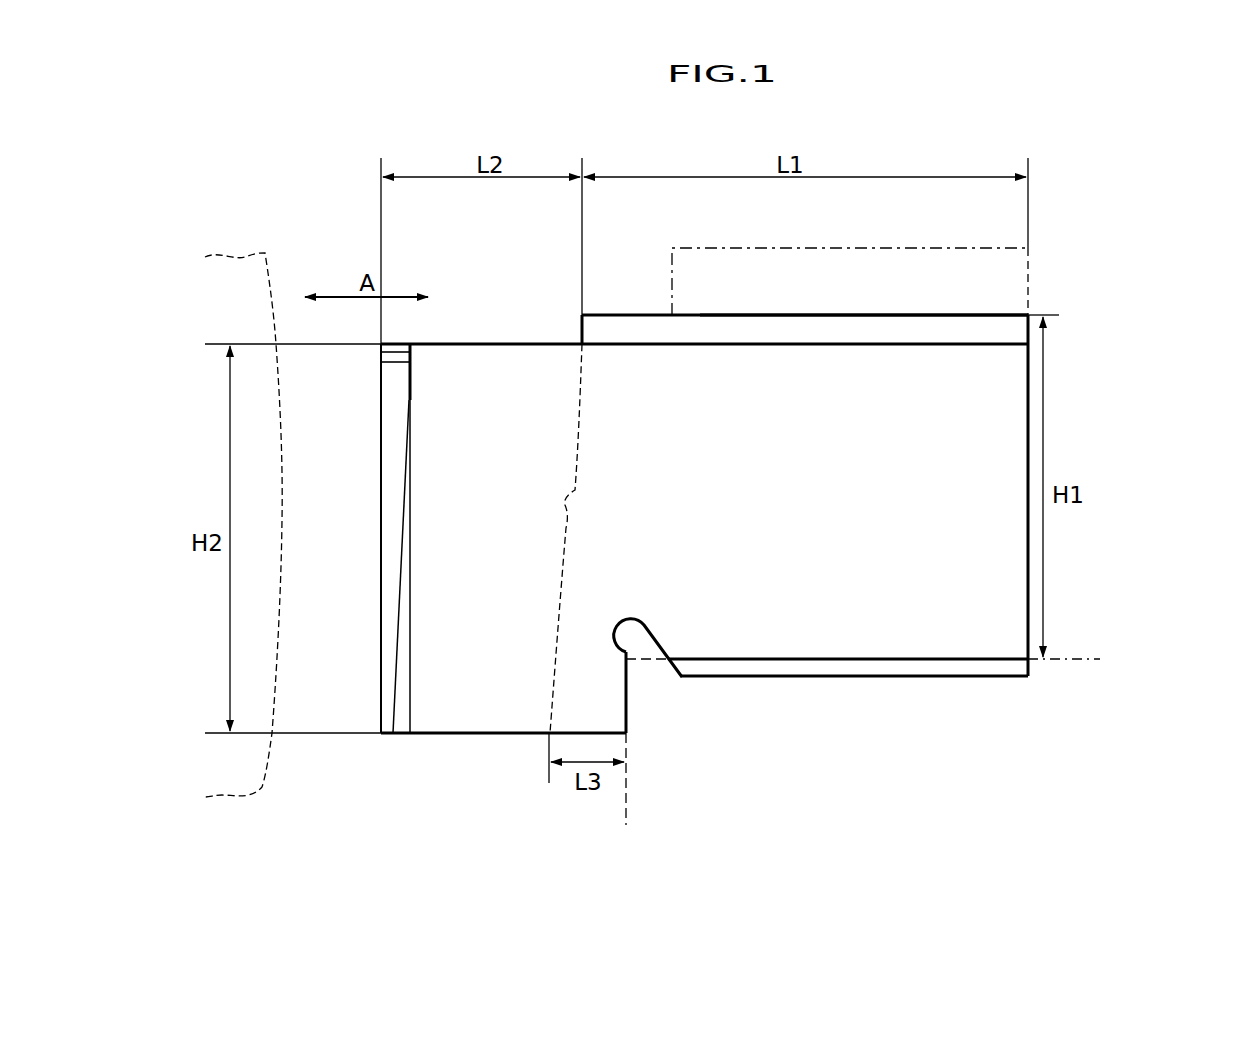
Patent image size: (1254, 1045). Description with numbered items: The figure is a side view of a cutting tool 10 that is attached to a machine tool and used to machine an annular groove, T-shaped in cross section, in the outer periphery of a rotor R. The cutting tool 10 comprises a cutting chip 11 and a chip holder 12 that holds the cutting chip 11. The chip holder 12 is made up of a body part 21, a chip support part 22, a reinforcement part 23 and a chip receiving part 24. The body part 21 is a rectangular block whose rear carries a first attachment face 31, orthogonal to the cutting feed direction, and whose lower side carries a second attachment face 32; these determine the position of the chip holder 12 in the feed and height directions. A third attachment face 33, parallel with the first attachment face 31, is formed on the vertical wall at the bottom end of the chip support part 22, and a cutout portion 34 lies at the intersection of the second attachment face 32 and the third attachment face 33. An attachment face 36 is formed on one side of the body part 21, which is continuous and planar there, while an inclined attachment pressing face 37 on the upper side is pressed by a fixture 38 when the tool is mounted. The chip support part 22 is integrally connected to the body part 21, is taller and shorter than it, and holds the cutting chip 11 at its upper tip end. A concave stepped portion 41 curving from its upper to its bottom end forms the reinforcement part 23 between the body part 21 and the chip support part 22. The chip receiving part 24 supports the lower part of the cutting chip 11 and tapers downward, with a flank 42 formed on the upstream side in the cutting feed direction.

The cutting tool 10 is at (768, 473).
The cutting chip 11 is at (380, 358).
The chip holder 12 is at (624, 312).
The body part 21 is at (890, 312).
The chip support part 22 is at (490, 342).
The reinforcement part 23 is at (628, 724).
The chip receiving part 24 is at (412, 433).
The first attachment face 31 is at (1030, 570).
The second attachment face 32 is at (940, 668).
The third attachment face 33 is at (628, 698).
The cutout portion 34 is at (634, 622).
The attachment face 36 is at (876, 615).
The attachment pressing face 37 is at (798, 325).
The fixture 38 is at (874, 262).
The stepped portion 41 is at (577, 494).
The flank 42 is at (410, 580).
The rotor R is at (283, 518).